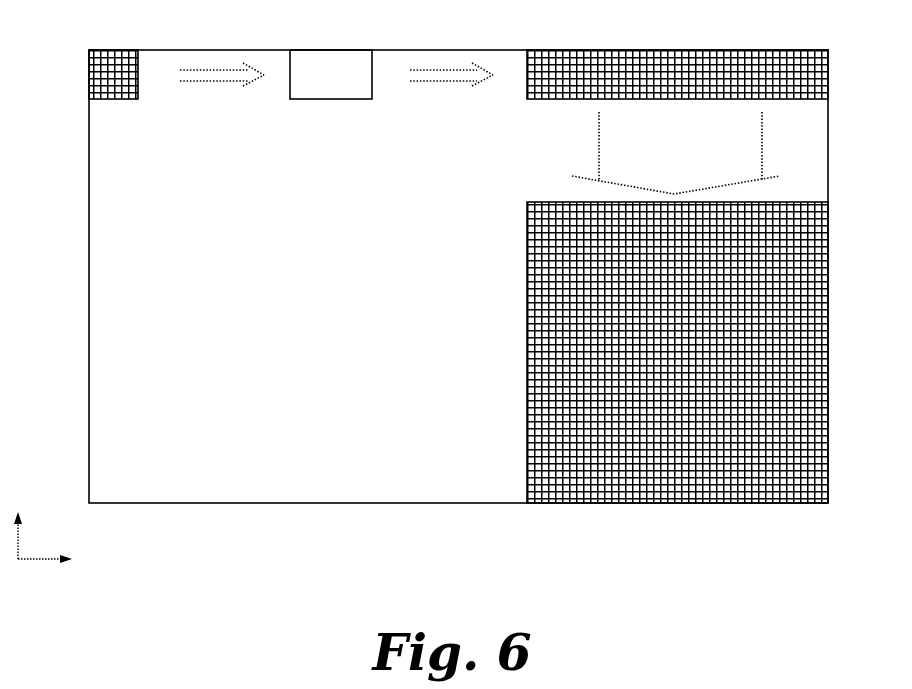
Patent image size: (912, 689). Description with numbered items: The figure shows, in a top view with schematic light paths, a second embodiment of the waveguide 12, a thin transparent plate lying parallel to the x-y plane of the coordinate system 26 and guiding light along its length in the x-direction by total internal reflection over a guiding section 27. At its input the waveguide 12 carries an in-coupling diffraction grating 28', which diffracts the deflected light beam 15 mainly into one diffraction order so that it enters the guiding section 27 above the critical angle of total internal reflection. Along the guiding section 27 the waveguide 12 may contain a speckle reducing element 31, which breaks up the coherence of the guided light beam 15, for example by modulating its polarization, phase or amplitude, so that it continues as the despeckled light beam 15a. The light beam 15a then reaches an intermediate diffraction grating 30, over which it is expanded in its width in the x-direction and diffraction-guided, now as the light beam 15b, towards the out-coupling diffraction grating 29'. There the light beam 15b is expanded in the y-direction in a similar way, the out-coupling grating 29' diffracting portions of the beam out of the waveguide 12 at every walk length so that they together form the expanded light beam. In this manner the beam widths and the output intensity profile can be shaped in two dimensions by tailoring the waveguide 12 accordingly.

The waveguide 12 is at (727, 540).
The deflected light beam 15 is at (223, 75).
The despeckled light beam 15a is at (435, 77).
The diffraction-guided light beam 15b is at (737, 176).
The coordinate system 26 is at (21, 562).
The guiding section 27 is at (167, 62).
The diffraction grating 28' is at (126, 53).
The out-coupling diffraction grating 29' is at (706, 352).
The intermediate diffraction grating 30 is at (683, 62).
The speckle reducing element 31 is at (325, 62).